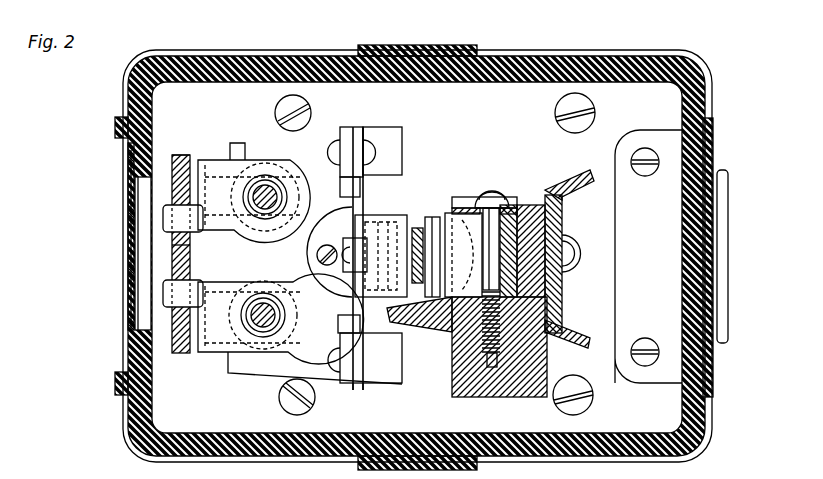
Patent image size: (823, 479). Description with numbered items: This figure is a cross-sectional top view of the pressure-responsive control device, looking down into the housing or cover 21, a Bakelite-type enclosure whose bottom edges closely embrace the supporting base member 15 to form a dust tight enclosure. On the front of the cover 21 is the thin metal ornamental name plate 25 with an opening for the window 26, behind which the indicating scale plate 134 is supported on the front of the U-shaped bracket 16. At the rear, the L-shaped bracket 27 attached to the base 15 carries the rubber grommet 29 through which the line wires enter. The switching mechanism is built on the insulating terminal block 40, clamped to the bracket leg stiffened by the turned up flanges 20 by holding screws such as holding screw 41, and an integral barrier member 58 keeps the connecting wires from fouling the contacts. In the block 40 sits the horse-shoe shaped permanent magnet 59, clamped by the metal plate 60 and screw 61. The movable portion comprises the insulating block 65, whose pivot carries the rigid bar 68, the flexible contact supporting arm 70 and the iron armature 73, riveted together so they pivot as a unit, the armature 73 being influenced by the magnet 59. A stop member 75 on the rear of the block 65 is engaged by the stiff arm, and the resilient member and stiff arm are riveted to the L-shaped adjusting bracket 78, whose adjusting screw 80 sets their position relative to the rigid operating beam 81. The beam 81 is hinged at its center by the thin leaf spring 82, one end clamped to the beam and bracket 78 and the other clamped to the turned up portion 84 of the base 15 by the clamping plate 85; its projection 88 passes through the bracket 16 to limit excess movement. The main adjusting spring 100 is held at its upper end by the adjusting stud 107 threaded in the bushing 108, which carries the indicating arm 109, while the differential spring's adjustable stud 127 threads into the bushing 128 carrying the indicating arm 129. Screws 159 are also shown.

The supporting base member 15 is at (212, 92).
The housing or cover 21 is at (306, 64).
The ornamental name plate 25 is at (128, 153).
The window 26 is at (131, 262).
The rubber grommet 29 is at (720, 197).
The L-shaped bracket 27 is at (645, 142).
The screw 159 is at (556, 108).
The U-shaped bracket 16 is at (187, 155).
The indicating scale plate 134 is at (175, 182).
The indicating arm 109 is at (165, 219).
The indicating arm 129 is at (163, 292).
The projection 88 is at (200, 243).
The main adjusting spring 100 is at (245, 158).
The adjusting stud 107 is at (265, 192).
The operating beam 81 is at (248, 367).
The bushing 128 is at (283, 320).
The adjustable stud 127 is at (270, 323).
The bushing 108 is at (287, 167).
The insulating supporting member or block 65 is at (362, 283).
The leaf spring 82 is at (358, 343).
The turned up portion 84 is at (356, 382).
The clamping plate 85 is at (365, 375).
The adjusting bracket 78 is at (323, 207).
The adjusting screw 80 is at (317, 254).
The stop member 75 is at (343, 262).
The rigid bar 68 is at (420, 228).
The flexible contact supporting arm 70 is at (418, 230).
The iron armature 73 is at (437, 230).
The metal plate 60 is at (462, 204).
The permanent magnet 59 is at (467, 226).
The screw 61 is at (500, 197).
The terminal block 40 is at (512, 385).
The barrier member 58 is at (412, 323).
The turned up flanges 20 is at (578, 183).
The holding screw 41 is at (593, 229).